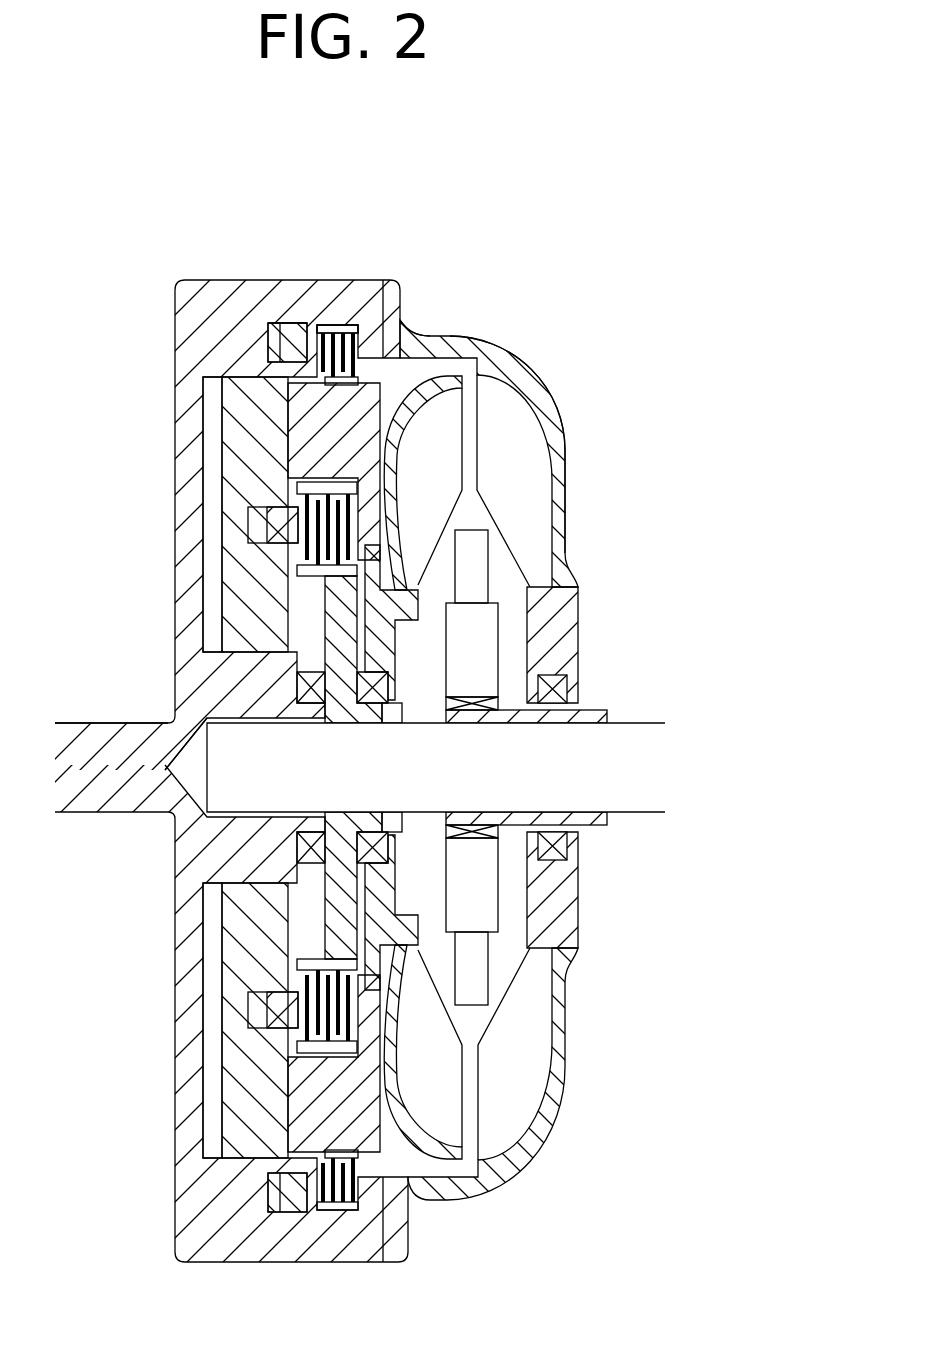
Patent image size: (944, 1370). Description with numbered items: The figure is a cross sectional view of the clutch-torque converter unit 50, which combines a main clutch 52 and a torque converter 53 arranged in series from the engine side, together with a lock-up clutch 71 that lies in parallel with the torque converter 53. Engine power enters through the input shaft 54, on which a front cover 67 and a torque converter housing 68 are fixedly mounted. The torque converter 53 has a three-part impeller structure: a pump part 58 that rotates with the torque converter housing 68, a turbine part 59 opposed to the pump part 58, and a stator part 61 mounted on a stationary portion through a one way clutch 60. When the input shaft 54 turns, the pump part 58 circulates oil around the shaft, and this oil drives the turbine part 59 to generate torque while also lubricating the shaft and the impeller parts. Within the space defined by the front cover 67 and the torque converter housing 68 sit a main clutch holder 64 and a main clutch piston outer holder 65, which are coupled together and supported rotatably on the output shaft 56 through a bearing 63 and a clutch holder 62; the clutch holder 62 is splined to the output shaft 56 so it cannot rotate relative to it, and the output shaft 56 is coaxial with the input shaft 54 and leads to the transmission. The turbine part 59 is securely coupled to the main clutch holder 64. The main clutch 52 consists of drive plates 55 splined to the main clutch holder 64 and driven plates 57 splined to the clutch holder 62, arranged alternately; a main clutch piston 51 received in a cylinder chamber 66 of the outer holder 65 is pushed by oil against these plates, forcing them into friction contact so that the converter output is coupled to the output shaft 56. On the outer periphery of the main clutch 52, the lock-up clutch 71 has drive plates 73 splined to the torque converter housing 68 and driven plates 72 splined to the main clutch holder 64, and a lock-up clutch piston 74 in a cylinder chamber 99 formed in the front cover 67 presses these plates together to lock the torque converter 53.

The clutch-torque converter unit 50 is at (560, 263).
The main clutch piston 51 is at (270, 505).
The main clutch 52 is at (280, 560).
The torque converter 53 is at (562, 440).
The input shaft 54 is at (90, 748).
The drive plates 55 is at (382, 470).
The output shaft 56 is at (630, 750).
The driven plates 57 is at (378, 535).
The pump part 58 is at (508, 415).
The turbine part 59 is at (478, 350).
The one way clutch 60 is at (530, 690).
The stator part 61 is at (473, 565).
The clutch holder 62 is at (365, 645).
The bearing 63 is at (385, 722).
The main clutch holder 64 is at (378, 400).
The main clutch piston outer holder 65 is at (245, 415).
The cylinder chamber 66 is at (252, 522).
The front cover 67 is at (175, 333).
The torque converter housing 68 is at (425, 335).
The lock-up clutch 71 is at (350, 324).
The driven plates 72 is at (365, 348).
The drive plates 73 is at (336, 325).
The lock-up clutch piston 74 is at (292, 322).
The cylinder chamber 99 is at (282, 322).